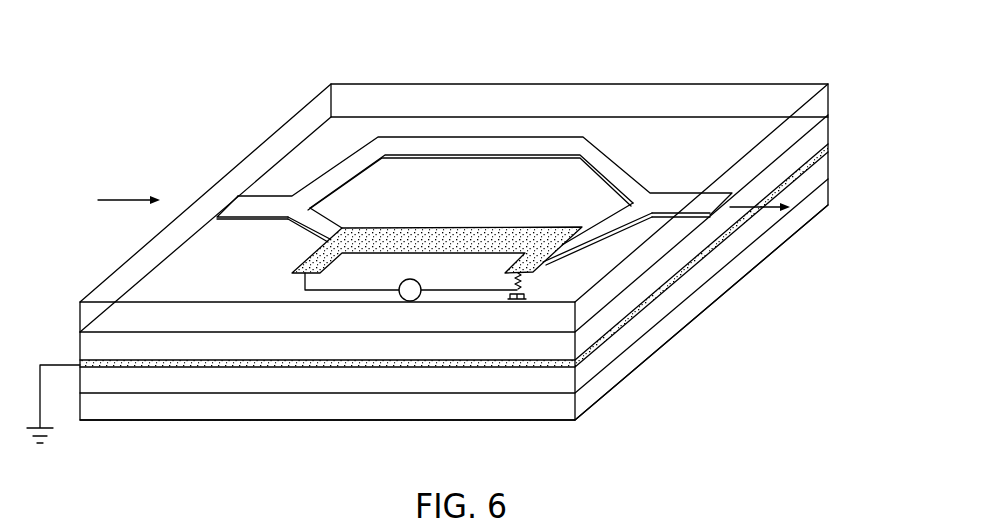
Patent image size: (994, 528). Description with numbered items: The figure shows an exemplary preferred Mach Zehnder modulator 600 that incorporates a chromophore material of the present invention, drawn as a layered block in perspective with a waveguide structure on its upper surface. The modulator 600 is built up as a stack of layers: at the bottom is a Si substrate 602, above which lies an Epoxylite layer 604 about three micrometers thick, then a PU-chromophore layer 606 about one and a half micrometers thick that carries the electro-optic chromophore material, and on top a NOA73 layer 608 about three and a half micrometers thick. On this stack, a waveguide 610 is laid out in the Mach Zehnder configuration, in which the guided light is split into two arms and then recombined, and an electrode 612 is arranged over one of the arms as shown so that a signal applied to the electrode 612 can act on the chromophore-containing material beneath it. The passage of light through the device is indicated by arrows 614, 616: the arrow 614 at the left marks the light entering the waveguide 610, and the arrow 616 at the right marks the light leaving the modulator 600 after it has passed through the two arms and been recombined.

The Mach Zehnder modulator 600 is at (211, 49).
The Si substrate 602 is at (248, 408).
The Epoxylite layer 604 is at (581, 380).
The PU-chromophore layer 606 is at (581, 341).
The NOA73 layer 608 is at (580, 306).
The waveguide 610 is at (425, 142).
The electrode 612 is at (566, 216).
The light arrow 614 is at (118, 198).
The light arrow 616 is at (767, 210).